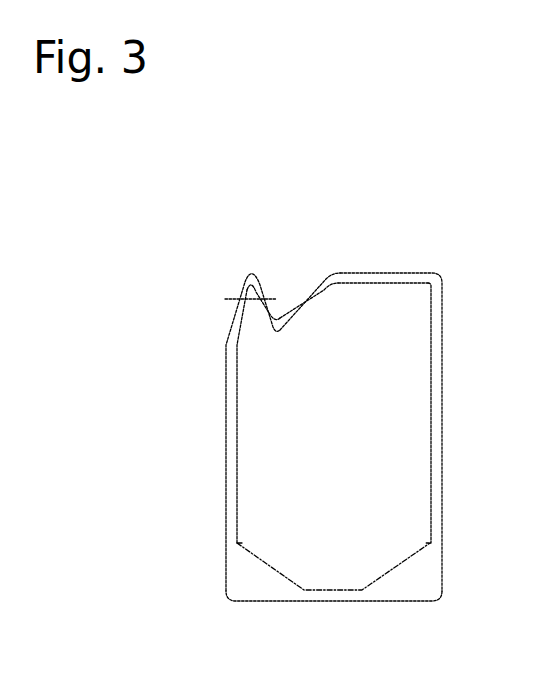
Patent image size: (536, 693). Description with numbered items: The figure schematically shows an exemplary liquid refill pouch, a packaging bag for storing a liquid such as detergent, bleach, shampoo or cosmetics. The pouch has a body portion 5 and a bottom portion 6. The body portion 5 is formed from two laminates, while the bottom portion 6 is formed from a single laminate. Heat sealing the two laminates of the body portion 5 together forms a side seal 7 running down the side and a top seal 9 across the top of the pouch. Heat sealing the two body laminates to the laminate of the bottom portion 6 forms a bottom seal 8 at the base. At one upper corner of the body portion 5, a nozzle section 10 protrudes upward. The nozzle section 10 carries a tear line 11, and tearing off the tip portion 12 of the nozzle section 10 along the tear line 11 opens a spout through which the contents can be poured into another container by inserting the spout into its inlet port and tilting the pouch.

The body portion 5 is at (413, 352).
The bottom portion 6 is at (336, 578).
The side seal 7 is at (434, 436).
The bottom seal 8 is at (413, 591).
The top seal 9 is at (381, 277).
The nozzle section 10 is at (246, 318).
The tear line 11 is at (275, 299).
The tip portion 12 is at (247, 277).